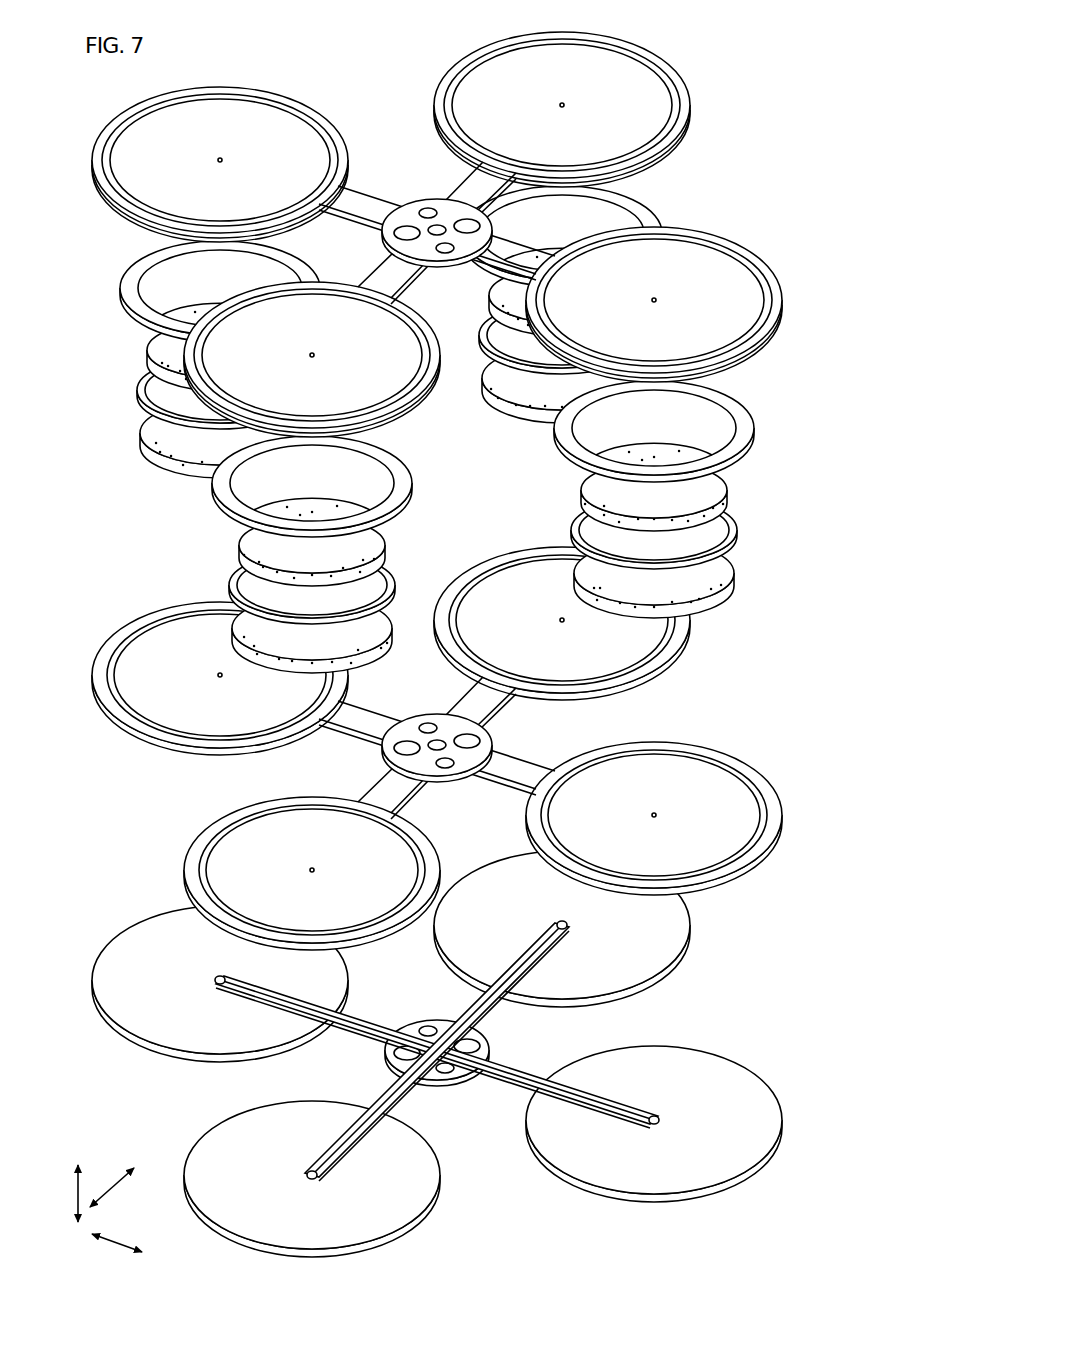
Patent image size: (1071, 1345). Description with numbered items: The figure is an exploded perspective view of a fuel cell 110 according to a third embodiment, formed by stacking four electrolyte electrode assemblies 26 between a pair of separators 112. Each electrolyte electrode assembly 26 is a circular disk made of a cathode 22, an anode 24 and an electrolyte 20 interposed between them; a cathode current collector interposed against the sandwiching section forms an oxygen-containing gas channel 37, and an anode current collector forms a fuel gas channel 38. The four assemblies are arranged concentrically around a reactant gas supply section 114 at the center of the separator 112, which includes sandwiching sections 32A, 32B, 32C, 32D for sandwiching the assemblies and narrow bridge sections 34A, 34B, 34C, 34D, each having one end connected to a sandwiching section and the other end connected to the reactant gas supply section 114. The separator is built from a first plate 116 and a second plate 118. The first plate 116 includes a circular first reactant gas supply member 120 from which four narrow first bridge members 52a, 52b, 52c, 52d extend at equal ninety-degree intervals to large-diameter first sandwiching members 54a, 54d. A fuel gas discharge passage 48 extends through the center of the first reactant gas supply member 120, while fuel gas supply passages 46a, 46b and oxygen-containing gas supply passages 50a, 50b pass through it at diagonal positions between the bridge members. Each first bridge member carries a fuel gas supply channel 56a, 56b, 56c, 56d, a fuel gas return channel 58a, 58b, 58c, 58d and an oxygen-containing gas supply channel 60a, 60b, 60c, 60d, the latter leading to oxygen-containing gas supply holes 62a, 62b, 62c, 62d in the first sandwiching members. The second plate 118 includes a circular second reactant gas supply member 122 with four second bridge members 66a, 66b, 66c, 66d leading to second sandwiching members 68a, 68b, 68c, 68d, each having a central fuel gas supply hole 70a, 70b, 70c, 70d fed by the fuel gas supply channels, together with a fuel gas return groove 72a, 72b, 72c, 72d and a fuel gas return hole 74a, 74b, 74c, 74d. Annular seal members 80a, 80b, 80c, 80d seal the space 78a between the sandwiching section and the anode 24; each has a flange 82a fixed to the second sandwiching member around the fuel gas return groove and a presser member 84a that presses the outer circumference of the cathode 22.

The fuel cell 110 is at (252, 60).
The separator 112 is at (629, 529).
The reactant gas supply section 114 is at (452, 615).
The first plate 116 is at (674, 1091).
The second plate 118 is at (662, 853).
The first reactant gas supply member 120 is at (436, 1043).
The second reactant gas supply member 122 is at (451, 747).
The electrolyte 20 is at (649, 524).
The cathode 22 is at (630, 489).
The anode 24 is at (634, 565).
The electrolyte electrode assembly 26 is at (236, 568).
The sandwiching section 32A is at (744, 252).
The sandwiching section 32B is at (262, 87).
The sandwiching section 32C is at (686, 70).
The sandwiching section 32D is at (262, 287).
The bridge section 34A is at (534, 250).
The bridge section 34B is at (357, 192).
The bridge section 34C is at (477, 168).
The bridge section 34D is at (385, 282).
The oxygen-containing gas channel 37 is at (737, 509).
The fuel gas channel 38 is at (723, 591).
The fuel gas supply passage 46a is at (445, 252).
The fuel gas supply passage 46b is at (428, 210).
The fuel gas discharge passage 48 is at (450, 237).
The oxygen-containing gas supply passage 50a is at (467, 222).
The oxygen-containing gas supply passage 50b is at (395, 235).
The first bridge member 52a is at (436, 1051).
The first bridge member 52b is at (436, 1051).
The first bridge member 52c is at (436, 1043).
The first bridge member 52d is at (436, 1043).
The first sandwiching member 54a is at (751, 1086).
The first sandwiching member 54d is at (208, 1140).
The fuel gas supply channel 56a is at (436, 1056).
The fuel gas supply channel 56b is at (436, 1056).
The fuel gas supply channel 56c is at (436, 1043).
The fuel gas supply channel 56d is at (436, 1043).
The fuel gas return channel 58a is at (327, 1008).
The fuel gas return channel 58b is at (433, 1046).
The fuel gas return channel 58c is at (444, 1056).
The fuel gas return channel 58d is at (512, 973).
The oxygen-containing gas supply channel 60a is at (249, 990).
The oxygen-containing gas supply channel 60b is at (437, 1050).
The oxygen-containing gas supply channel 60c is at (438, 1050).
The oxygen-containing gas supply channel 60d is at (545, 958).
The oxygen-containing gas supply hole 62a is at (654, 1110).
The oxygen-containing gas supply hole 62b is at (222, 988).
The oxygen-containing gas supply hole 62c is at (568, 931).
The oxygen-containing gas supply hole 62d is at (310, 1168).
The second bridge member 66a is at (543, 773).
The second bridge member 66b is at (375, 717).
The second bridge member 66c is at (513, 698).
The second bridge member 66d is at (362, 794).
The second sandwiching member 68a is at (662, 813).
The second sandwiching member 68b is at (219, 663).
The second sandwiching member 68c is at (588, 623).
The second sandwiching member 68d is at (292, 871).
The fuel gas supply hole 70a is at (653, 813).
The fuel gas supply hole 70b is at (221, 671).
The fuel gas supply hole 70c is at (562, 616).
The fuel gas supply hole 70d is at (312, 873).
The fuel gas return groove 72a is at (757, 803).
The fuel gas return groove 72b is at (112, 688).
The fuel gas return groove 72c is at (462, 596).
The fuel gas return groove 72d is at (382, 918).
The fuel gas return hole 74a is at (558, 788).
The fuel gas return hole 74b is at (313, 704).
The fuel gas return hole 74c is at (510, 673).
The fuel gas return hole 74d is at (367, 818).
The space 78a is at (735, 443).
The seal member 80a is at (691, 426).
The seal member 80b is at (131, 254).
The seal member 80c is at (648, 203).
The seal member 80d is at (207, 485).
The flange 82a is at (738, 456).
The presser member 84a is at (733, 414).